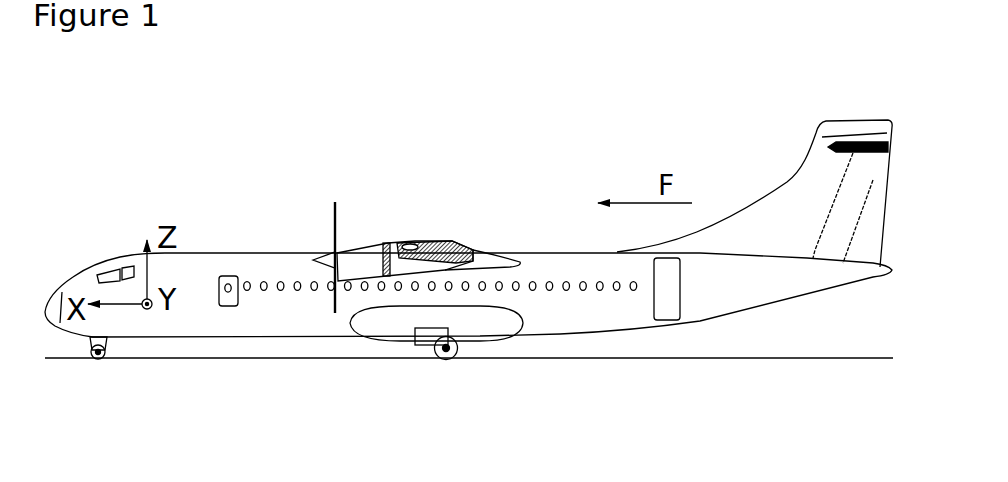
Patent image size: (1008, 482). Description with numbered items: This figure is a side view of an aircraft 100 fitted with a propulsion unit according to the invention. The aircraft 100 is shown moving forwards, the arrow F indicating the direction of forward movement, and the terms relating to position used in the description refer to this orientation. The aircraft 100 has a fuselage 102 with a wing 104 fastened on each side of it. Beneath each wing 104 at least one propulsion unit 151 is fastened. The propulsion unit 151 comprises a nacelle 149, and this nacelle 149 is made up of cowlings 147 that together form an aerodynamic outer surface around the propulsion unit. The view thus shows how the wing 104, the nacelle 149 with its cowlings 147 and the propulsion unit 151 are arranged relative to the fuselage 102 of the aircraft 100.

The aircraft 100 is at (550, 171).
The fuselage 102 is at (758, 288).
The wing 104 is at (487, 261).
The cowlings 147 is at (360, 261).
The nacelle 149 is at (377, 255).
The propulsion unit 151 is at (331, 192).